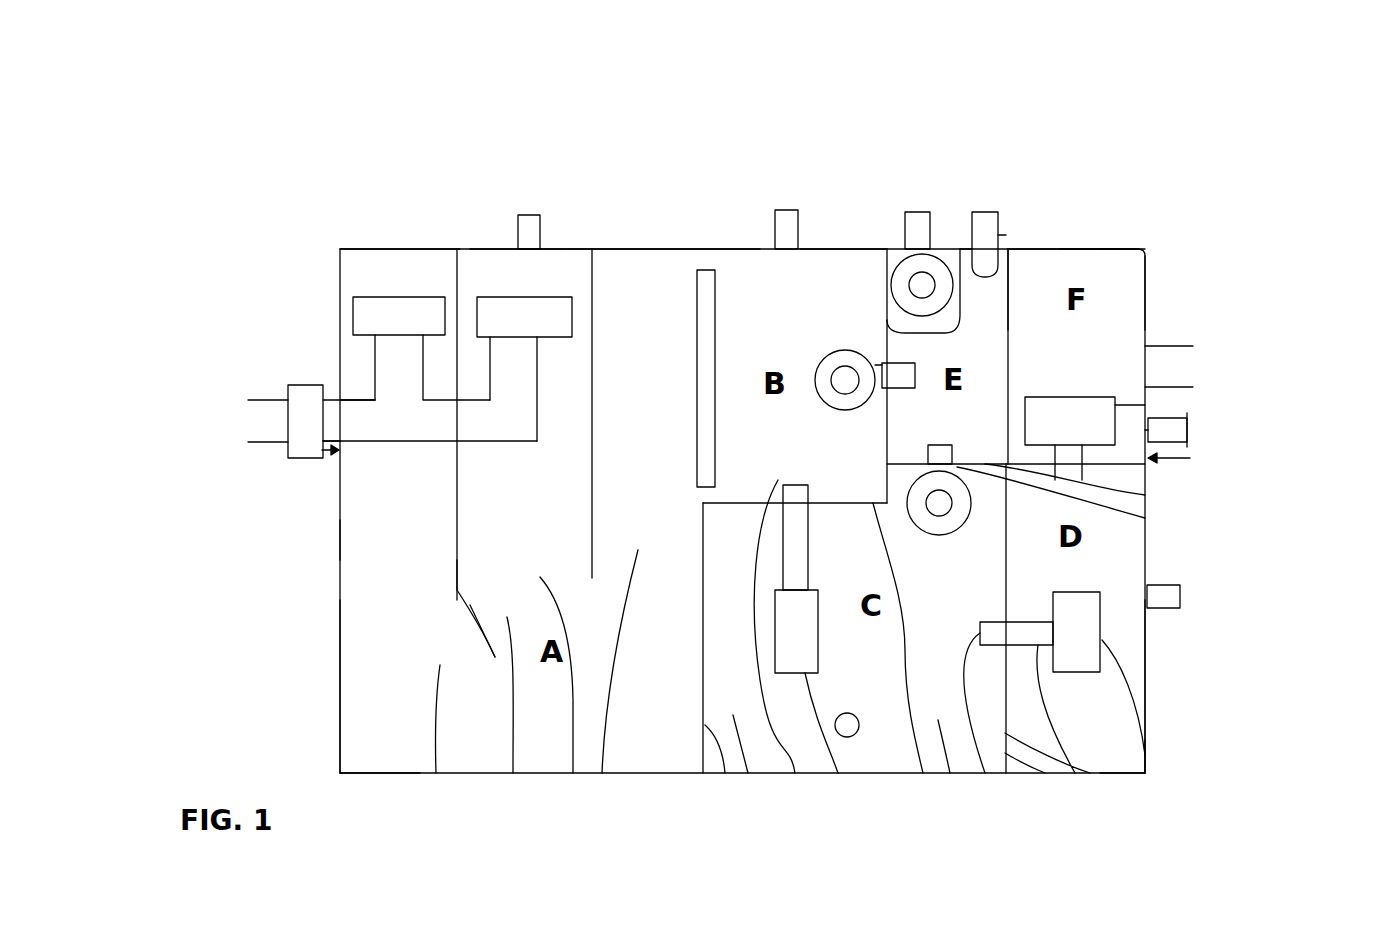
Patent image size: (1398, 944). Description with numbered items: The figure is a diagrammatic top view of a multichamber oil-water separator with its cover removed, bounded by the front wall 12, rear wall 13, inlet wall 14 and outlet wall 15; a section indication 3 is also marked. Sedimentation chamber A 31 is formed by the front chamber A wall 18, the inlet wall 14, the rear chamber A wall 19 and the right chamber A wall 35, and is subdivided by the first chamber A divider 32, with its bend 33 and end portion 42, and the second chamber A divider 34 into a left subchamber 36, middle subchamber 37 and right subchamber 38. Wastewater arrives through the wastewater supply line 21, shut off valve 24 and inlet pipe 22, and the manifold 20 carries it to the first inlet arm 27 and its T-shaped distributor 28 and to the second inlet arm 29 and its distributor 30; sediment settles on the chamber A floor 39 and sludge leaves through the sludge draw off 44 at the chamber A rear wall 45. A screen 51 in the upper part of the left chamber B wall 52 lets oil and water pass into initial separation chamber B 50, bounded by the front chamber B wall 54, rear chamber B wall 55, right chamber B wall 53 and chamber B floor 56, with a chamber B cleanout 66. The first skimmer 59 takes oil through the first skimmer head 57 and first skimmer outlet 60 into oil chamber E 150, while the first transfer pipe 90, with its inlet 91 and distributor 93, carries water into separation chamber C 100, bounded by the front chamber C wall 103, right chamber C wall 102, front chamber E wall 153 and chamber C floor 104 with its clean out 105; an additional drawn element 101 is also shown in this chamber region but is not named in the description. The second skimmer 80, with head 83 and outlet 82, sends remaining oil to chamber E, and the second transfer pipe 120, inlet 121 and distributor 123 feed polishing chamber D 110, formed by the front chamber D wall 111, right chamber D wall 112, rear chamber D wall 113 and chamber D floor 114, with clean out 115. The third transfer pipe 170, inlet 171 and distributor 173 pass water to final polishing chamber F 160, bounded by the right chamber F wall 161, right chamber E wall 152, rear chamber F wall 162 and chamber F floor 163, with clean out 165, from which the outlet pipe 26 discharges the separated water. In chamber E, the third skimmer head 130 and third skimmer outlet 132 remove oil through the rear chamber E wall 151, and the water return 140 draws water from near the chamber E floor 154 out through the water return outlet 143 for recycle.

The section line 3 is at (332, 462).
The front wall 12 is at (660, 773).
The rear wall 13 is at (655, 249).
The inlet wall 14 is at (340, 706).
The outlet wall 15 is at (1150, 738).
The front chamber A wall 18 is at (388, 773).
The rear chamber A wall 19 is at (387, 249).
The manifold 20 is at (397, 441).
The wastewater supply line 21 is at (252, 423).
The inlet pipe 22 is at (332, 400).
The shut off valve 24 is at (303, 385).
The outlet pipe 26 is at (1175, 346).
The first inlet arm 27 is at (373, 368).
The first inlet arm distributor 28 is at (375, 297).
The second inlet arm 29 is at (488, 367).
The second inlet arm distributor 30 is at (497, 297).
The sedimentation chamber A 31 is at (513, 773).
The first chamber A divider 32 is at (458, 543).
The bend 33 is at (458, 592).
The second chamber A divider 34 is at (593, 333).
The right chamber A wall 35 is at (705, 607).
The left subchamber 36 is at (367, 538).
The middle subchamber 37 is at (573, 773).
The right subchamber 38 is at (602, 773).
The chamber A floor 39 is at (436, 773).
The first chamber A divider end portion 42 is at (480, 623).
The sludge draw off 44 is at (530, 215).
The chamber A rear wall 45 is at (503, 249).
The initial separation chamber B 50 is at (753, 287).
The screen 51 is at (717, 337).
The left chamber B wall 52 is at (697, 268).
The right chamber B wall 53 is at (975, 212).
The front chamber B wall 54 is at (923, 773).
The rear chamber B wall 55 is at (835, 272).
The chamber B floor 56 is at (838, 258).
The first skimmer head 57 is at (865, 352).
The first skimmer 59 is at (851, 350).
The first skimmer outlet 60 is at (880, 360).
The chamber B cleanout 66 is at (787, 210).
The second skimmer 80 is at (1145, 518).
The second skimmer outlet 82 is at (1145, 495).
The second skimmer head 83 is at (967, 520).
The first transfer pipe 90 is at (780, 557).
The first transfer pipe inlet 91 is at (795, 773).
The first transfer pipe distributor 93 is at (838, 773).
The separation chamber C 100 is at (748, 773).
The passage 101 is at (725, 773).
The right chamber C wall 102 is at (1045, 773).
The front chamber C wall 103 is at (985, 773).
The chamber C floor 104 is at (950, 773).
The chamber C clean out 105 is at (858, 735).
The polishing chamber D 110 is at (1123, 630).
The front chamber D wall 111 is at (1130, 773).
The right chamber D wall 112 is at (1152, 690).
The rear chamber D wall 113 is at (1187, 420).
The chamber D floor 114 is at (1128, 653).
The chamber D clean out 115 is at (1180, 597).
The second transfer pipe 120 is at (1090, 773).
The second transfer pipe inlet 121 is at (1000, 773).
The second transfer pipe distributor 123 is at (1147, 773).
The third skimmer head 130 is at (960, 249).
The third skimmer outlet 132 is at (930, 223).
The water return 140 is at (998, 235).
The water return outlet 143 is at (990, 210).
The oil chamber E 150 is at (980, 315).
The rear chamber E wall 151 is at (900, 249).
The right chamber E wall 152 is at (1008, 293).
The front chamber E wall 153 is at (1150, 510).
The chamber E floor 154 is at (1083, 280).
The final polishing chamber F 160 is at (1013, 327).
The right chamber F wall 161 is at (1147, 262).
The rear chamber F wall 162 is at (1097, 249).
The chamber F floor 163 is at (1107, 263).
The chamber F clean out 165 is at (1197, 455).
The third transfer pipe 170 is at (1143, 428).
The third transfer pipe inlet 171 is at (1175, 505).
The transfer pipe distributor 173 is at (1145, 405).